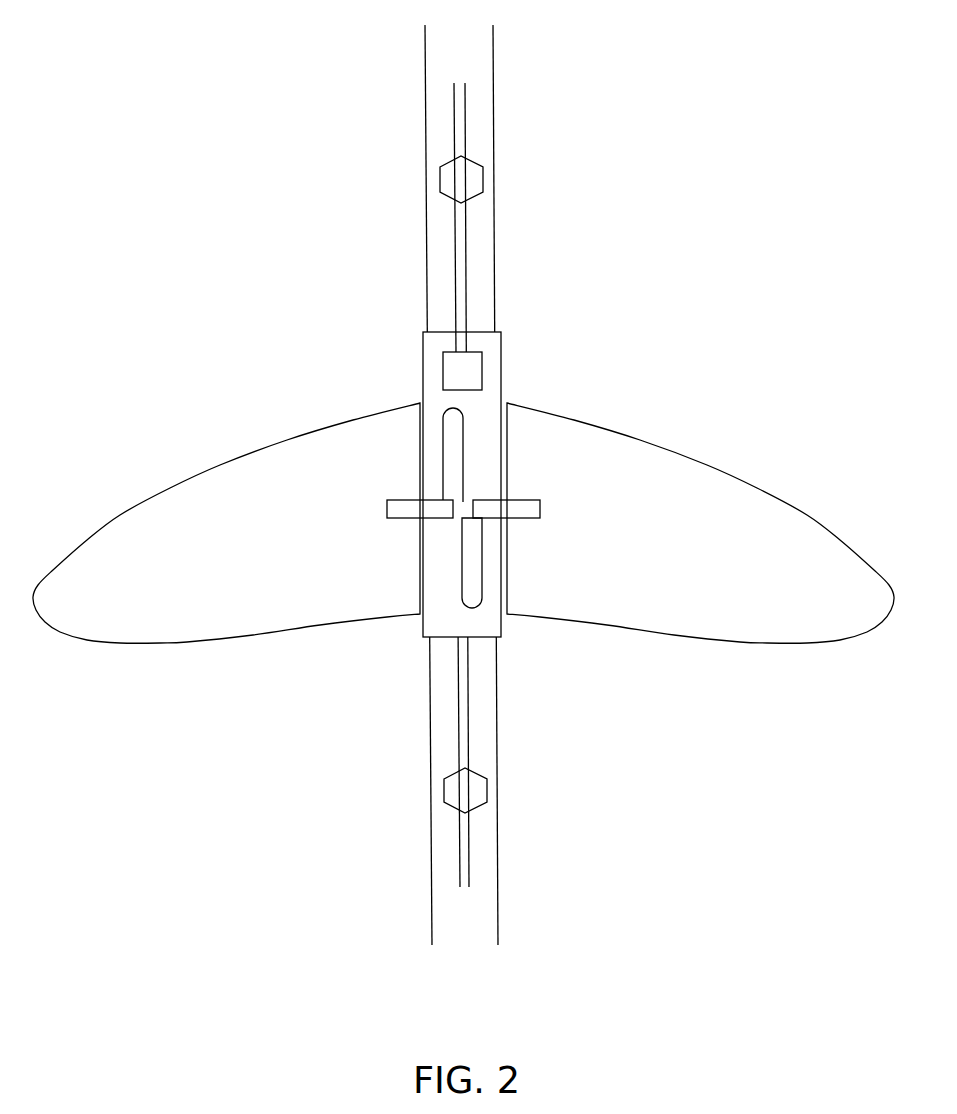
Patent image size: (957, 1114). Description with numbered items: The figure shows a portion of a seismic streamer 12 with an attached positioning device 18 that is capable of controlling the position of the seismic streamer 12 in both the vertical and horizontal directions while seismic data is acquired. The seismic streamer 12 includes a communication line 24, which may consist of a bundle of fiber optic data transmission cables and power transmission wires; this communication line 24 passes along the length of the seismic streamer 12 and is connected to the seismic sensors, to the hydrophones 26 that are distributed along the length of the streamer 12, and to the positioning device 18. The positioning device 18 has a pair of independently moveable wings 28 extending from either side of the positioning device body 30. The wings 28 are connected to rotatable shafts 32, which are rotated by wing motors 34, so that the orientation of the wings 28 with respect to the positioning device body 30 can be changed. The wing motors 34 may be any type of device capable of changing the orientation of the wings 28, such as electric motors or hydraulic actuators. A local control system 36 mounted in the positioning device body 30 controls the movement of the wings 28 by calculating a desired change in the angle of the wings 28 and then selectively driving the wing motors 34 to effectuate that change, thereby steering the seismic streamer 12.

The seismic streamer 12 is at (478, 108).
The positioning device 18 is at (716, 239).
The communication line 24 is at (462, 240).
The hydrophones 26 is at (452, 178).
The wings 28 is at (173, 497).
The positioning device body 30 is at (497, 628).
The rotatable shafts 32 is at (400, 507).
The wing motors 34 is at (453, 447).
The local control system 36 is at (462, 375).